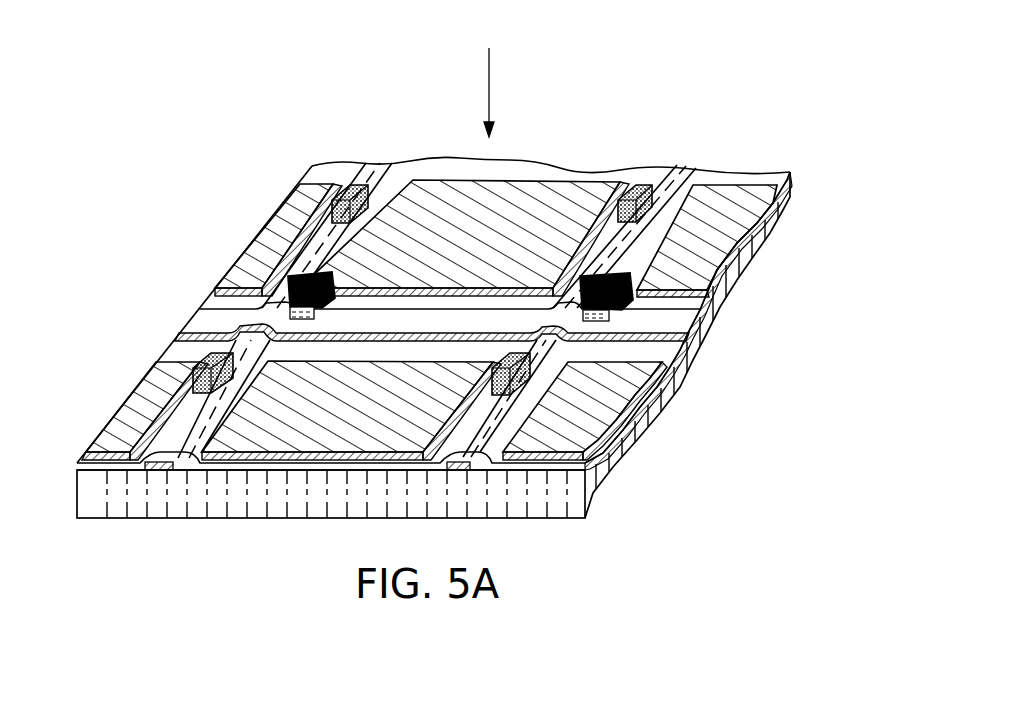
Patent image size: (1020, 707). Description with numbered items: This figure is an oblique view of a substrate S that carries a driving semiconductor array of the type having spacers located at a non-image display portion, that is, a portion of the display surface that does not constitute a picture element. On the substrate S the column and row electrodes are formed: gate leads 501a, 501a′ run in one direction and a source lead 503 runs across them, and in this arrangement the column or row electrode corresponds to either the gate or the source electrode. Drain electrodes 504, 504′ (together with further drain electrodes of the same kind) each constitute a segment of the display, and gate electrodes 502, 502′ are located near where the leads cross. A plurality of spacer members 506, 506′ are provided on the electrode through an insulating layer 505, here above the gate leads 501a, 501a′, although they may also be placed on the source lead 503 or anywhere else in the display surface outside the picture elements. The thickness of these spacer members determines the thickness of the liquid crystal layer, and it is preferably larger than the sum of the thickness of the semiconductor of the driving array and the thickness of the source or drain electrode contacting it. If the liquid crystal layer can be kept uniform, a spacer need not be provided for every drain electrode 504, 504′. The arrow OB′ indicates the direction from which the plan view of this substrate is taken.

The substrate S is at (107, 500).
The insulating layer 505 is at (80, 466).
The gate lead 501a is at (160, 472).
The gate lead 501a′ is at (455, 475).
The gate electrode 502 is at (241, 259).
The gate electrode 502′ is at (628, 280).
The source lead 503 is at (205, 322).
The drain electrode 504 is at (540, 195).
The drain electrode 504′ is at (736, 196).
The spacer member 506 is at (350, 187).
The spacer member 506′ is at (630, 186).
The arrow OB′ is at (492, 78).